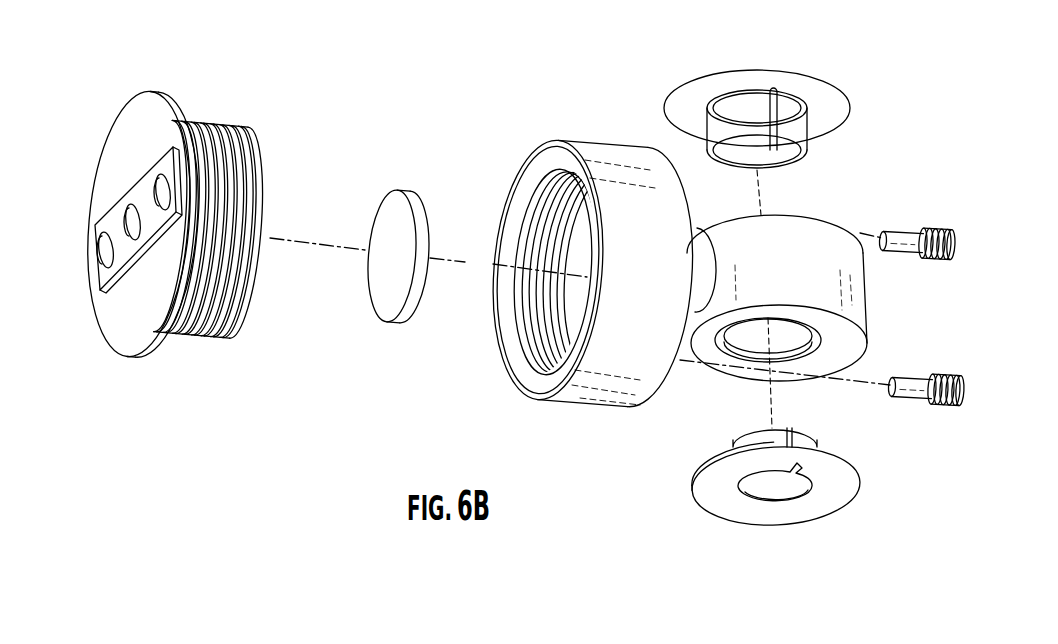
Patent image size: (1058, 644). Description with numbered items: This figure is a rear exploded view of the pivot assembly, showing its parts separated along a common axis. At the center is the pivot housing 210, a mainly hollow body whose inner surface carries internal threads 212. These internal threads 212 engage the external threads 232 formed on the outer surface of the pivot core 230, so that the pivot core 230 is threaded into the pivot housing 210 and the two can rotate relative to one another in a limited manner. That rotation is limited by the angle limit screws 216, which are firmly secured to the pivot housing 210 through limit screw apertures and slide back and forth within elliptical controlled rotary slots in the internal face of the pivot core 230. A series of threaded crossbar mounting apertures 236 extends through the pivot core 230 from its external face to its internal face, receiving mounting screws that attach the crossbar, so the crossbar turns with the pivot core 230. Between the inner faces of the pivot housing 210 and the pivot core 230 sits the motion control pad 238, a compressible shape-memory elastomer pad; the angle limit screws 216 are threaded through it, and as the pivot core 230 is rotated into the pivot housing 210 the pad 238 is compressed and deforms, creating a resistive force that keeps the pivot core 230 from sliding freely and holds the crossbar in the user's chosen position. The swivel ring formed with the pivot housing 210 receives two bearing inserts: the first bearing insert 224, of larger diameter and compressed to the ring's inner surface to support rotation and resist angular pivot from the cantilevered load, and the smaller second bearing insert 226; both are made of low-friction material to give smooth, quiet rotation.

The pivot housing 210 is at (575, 140).
The internal threads 212 is at (523, 357).
The angle limit screws 216 is at (903, 232).
The first bearing insert 224 is at (838, 72).
The second bearing insert 226 is at (842, 506).
The pivot core 230 is at (90, 205).
The external threads 232 is at (208, 125).
The crossbar mounting apertures 236 is at (100, 257).
The motion control pad 238 is at (368, 293).